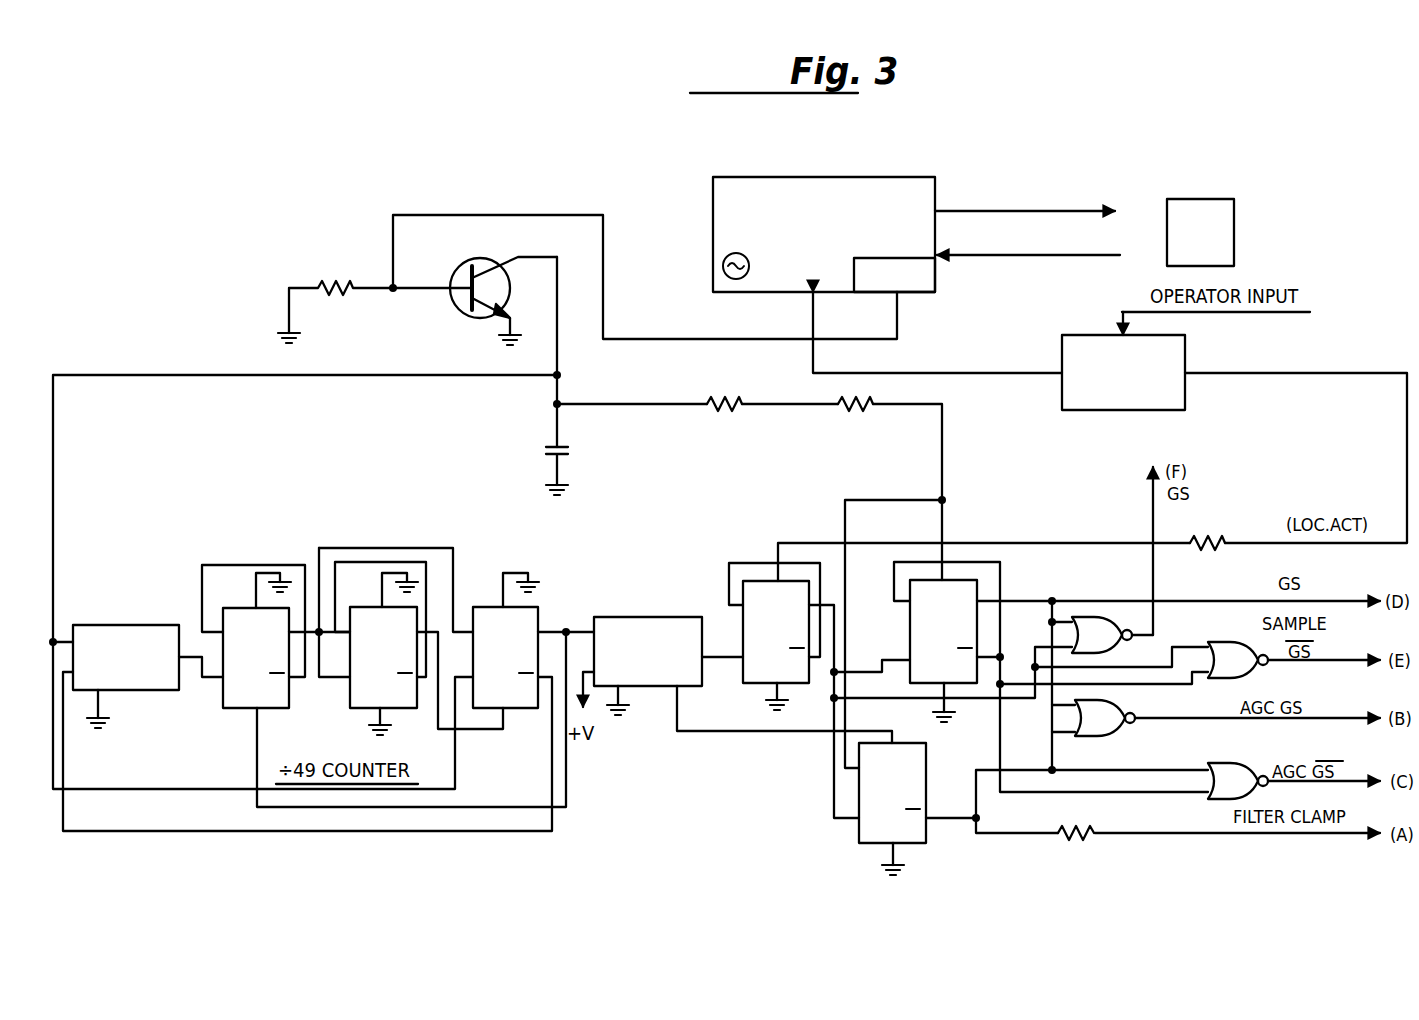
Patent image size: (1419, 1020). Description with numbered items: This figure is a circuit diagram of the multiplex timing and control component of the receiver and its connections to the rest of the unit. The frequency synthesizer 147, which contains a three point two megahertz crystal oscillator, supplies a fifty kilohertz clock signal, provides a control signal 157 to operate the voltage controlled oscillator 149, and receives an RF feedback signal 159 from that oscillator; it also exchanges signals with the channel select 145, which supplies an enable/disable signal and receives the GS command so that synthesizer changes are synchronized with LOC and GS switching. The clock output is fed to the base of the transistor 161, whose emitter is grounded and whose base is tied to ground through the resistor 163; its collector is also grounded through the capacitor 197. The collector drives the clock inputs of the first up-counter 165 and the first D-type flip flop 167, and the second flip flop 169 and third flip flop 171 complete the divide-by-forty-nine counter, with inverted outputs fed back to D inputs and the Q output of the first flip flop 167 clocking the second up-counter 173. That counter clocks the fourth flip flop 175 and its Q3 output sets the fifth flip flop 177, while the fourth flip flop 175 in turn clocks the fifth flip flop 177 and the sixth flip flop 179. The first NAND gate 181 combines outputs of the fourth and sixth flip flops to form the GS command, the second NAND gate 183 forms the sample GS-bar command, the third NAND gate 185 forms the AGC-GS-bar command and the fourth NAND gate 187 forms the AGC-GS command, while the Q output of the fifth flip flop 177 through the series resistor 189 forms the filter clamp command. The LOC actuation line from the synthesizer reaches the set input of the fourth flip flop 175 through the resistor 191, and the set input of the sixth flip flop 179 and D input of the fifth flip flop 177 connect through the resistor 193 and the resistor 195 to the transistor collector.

The channel select 145 is at (1175, 395).
The frequency synthesizer 147 is at (797, 190).
The voltage controlled oscillator 149 is at (1203, 210).
The control signal 157 is at (1025, 197).
The RF feedback signal 159 is at (1028, 241).
The transistor 161 is at (463, 276).
The resistor 163 is at (342, 282).
The first up-counter 165 is at (135, 635).
The first D-type flip flop 167 is at (522, 710).
The second D-type flip flop 169 is at (233, 702).
The third D-type flip flop 171 is at (360, 695).
The second up-counter 173 is at (648, 630).
The fourth D-type flip flop 175 is at (755, 675).
The fifth D-type flip flop 177 is at (859, 842).
The sixth D-type flip flop 179 is at (920, 630).
The first two-input NAND gate 181 is at (1090, 622).
The second two-input NAND gate 183 is at (1230, 650).
The third two-input NAND gate 185 is at (1240, 768).
The fourth two-input NAND gate 187 is at (1106, 725).
The series resistor 189 is at (1075, 838).
The resistor 191 is at (1210, 541).
The resistor 193 is at (860, 412).
The resistor 195 is at (733, 408).
The capacitor 197 is at (548, 445).